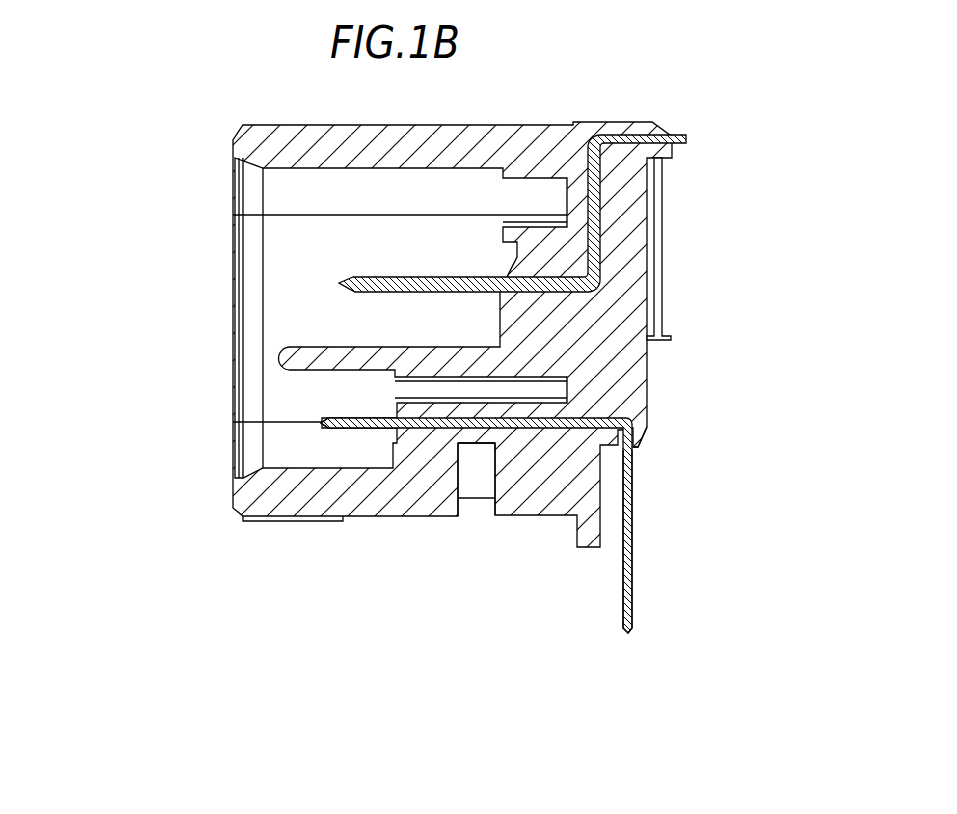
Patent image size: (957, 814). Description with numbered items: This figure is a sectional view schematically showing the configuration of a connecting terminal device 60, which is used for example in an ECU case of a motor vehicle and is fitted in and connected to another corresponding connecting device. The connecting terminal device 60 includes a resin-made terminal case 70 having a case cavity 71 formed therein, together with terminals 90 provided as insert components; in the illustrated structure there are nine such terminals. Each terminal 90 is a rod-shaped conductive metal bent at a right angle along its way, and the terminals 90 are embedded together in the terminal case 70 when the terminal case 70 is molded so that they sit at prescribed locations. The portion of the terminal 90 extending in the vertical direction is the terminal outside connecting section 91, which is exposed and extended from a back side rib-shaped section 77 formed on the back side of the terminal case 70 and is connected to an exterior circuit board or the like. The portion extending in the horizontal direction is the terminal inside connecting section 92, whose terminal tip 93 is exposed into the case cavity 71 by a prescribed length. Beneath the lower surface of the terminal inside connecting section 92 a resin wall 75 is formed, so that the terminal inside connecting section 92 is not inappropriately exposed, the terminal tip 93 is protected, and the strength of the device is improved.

The connecting terminal device 60 is at (98, 34).
The terminal case 70 is at (243, 125).
The case cavity 71 is at (302, 242).
The resin wall 75 is at (470, 443).
The back side rib-shaped section 77 is at (645, 435).
The terminal 90 is at (605, 415).
The terminal outside connecting section 91 is at (633, 562).
The terminal inside connecting section 92 is at (495, 430).
The terminal tip 93 is at (328, 432).